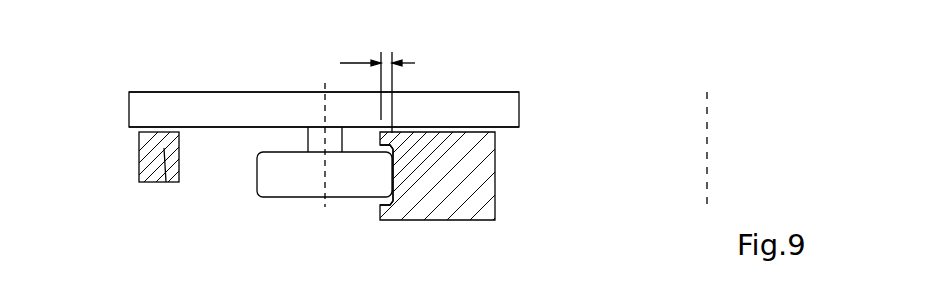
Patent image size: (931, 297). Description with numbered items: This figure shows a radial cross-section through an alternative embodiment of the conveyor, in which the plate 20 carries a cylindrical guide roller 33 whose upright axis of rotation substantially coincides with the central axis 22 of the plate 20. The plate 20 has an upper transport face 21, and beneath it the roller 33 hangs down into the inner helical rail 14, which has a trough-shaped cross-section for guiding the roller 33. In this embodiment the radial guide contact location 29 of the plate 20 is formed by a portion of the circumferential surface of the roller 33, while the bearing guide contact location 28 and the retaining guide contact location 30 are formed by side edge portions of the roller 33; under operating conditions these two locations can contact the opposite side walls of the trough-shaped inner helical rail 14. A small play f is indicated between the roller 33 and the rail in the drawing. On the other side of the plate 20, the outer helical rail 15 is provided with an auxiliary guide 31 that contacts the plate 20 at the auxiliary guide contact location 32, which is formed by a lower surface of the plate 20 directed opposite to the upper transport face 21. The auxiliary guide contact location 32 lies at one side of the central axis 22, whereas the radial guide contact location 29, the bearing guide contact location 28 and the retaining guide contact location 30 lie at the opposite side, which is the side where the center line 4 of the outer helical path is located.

The center line 4 is at (708, 108).
The inner helical rail 14 is at (456, 202).
The outer helical rail 15 is at (142, 155).
The plate 20 is at (472, 98).
The upper transport face 21 is at (157, 92).
The central axis 22 is at (325, 83).
The bearing guide contact location 28 is at (392, 206).
The radial guide contact location 29 is at (396, 175).
The retaining guide contact location 30 is at (392, 147).
The auxiliary guide 31 is at (153, 132).
The auxiliary guide contact location 32 is at (166, 182).
The cylindrical guide roller 33 is at (292, 190).
The clearance f is at (377, 83).